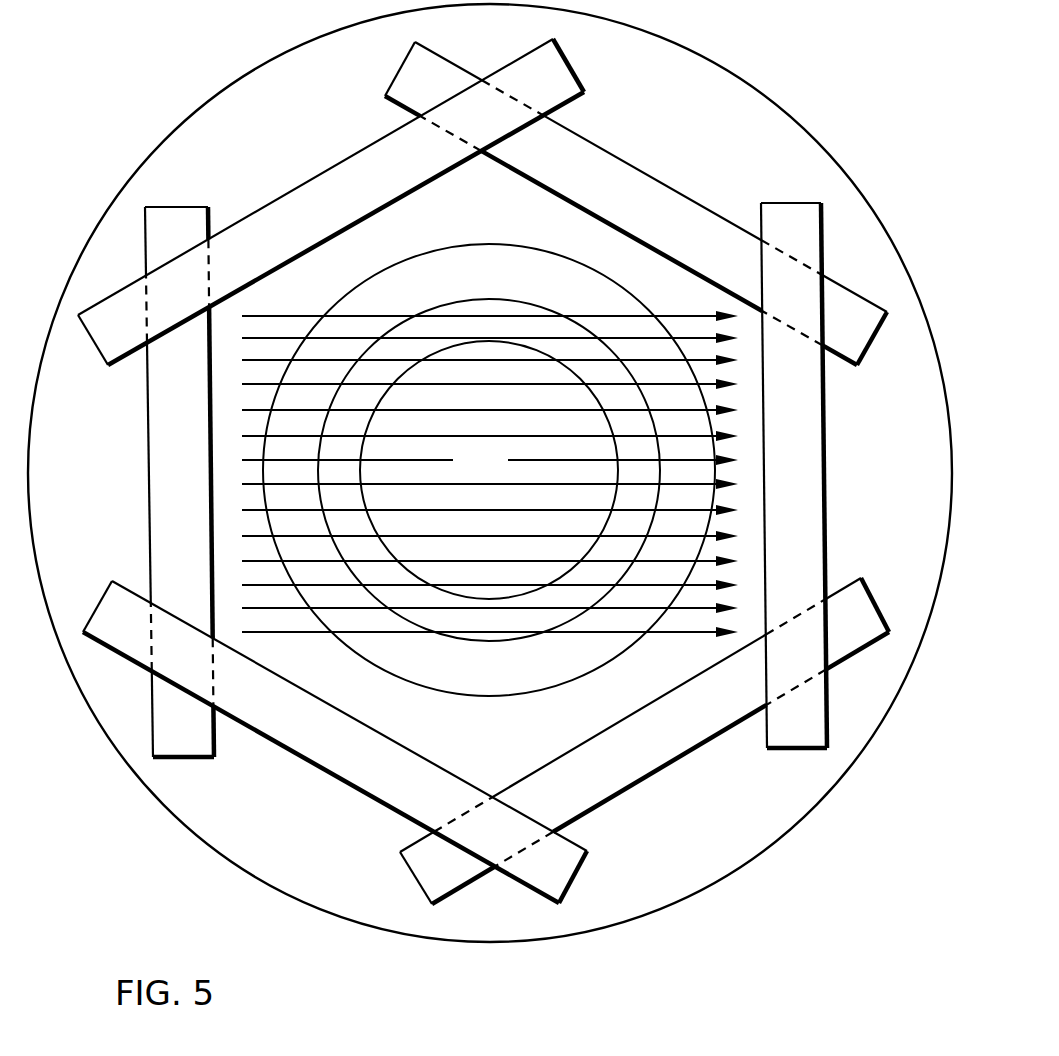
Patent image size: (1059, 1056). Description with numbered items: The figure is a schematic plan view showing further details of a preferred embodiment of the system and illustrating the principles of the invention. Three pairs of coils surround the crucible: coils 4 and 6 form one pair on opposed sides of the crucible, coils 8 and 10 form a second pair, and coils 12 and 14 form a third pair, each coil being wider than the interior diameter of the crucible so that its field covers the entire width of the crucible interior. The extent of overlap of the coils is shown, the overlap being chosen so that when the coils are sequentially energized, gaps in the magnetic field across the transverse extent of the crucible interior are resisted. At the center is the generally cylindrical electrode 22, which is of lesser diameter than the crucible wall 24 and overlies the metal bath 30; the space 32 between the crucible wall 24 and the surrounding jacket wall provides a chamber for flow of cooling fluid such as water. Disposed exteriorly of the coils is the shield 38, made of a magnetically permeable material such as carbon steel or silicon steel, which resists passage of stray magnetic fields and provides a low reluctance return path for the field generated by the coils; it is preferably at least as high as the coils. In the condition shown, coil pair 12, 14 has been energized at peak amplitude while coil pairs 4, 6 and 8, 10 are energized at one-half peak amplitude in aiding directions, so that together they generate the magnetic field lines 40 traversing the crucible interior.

The coil 4 is at (316, 225).
The coil 6 is at (643, 745).
The coil 8 is at (324, 753).
The coil 10 is at (636, 225).
The coil 12 is at (166, 480).
The coil 14 is at (778, 480).
The electrode 22 is at (472, 472).
The crucible wall 24 is at (283, 370).
The metal bath 30 is at (477, 307).
The space 32 is at (328, 337).
The shield 38 is at (750, 83).
The magnetic field lines 40 is at (687, 337).